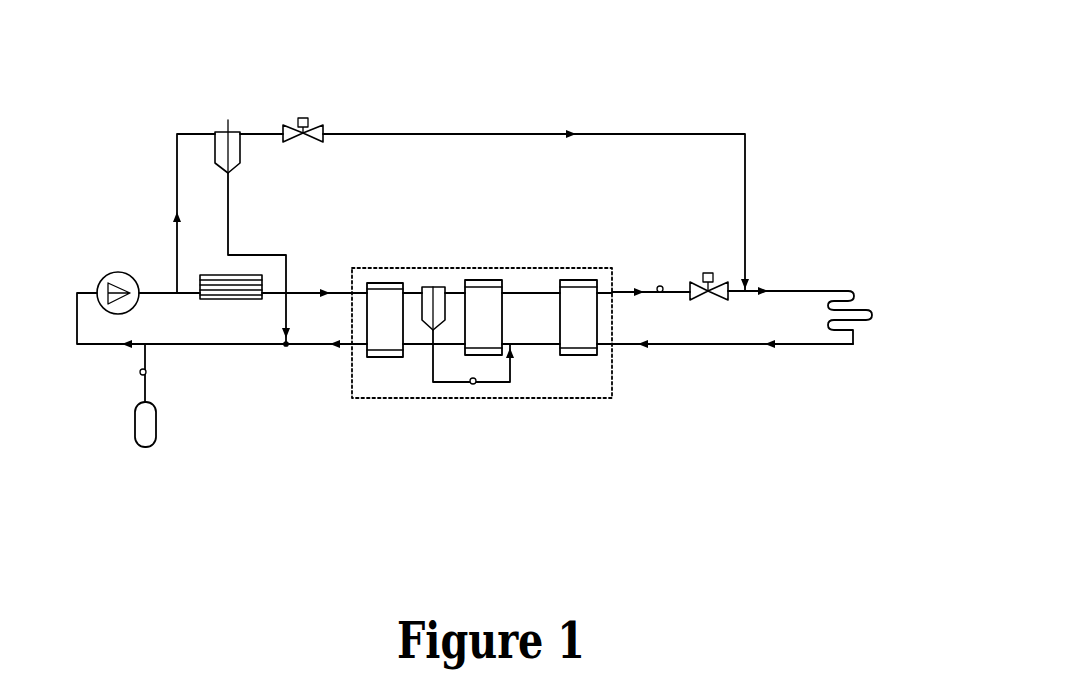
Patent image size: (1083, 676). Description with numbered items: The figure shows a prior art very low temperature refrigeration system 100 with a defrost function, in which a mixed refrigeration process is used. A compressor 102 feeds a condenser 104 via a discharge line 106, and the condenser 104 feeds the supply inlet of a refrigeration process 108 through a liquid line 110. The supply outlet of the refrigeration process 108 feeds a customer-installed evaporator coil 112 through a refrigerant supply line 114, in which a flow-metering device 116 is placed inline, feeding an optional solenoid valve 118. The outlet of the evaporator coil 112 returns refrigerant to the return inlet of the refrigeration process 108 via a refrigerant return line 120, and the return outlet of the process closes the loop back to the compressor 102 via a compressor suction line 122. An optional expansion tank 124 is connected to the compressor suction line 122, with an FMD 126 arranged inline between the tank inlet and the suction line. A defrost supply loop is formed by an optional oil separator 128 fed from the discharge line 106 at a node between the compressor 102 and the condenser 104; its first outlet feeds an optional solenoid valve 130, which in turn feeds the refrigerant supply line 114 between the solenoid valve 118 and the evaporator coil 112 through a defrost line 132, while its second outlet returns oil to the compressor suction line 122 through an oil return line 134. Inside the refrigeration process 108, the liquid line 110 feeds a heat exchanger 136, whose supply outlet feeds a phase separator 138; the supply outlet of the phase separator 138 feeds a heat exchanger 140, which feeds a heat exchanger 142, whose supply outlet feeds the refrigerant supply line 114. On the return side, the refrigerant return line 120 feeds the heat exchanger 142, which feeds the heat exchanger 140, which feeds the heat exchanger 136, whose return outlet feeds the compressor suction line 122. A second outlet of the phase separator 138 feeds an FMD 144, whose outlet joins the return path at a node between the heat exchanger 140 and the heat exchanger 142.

The refrigeration system 100 is at (712, 84).
The compressor 102 is at (118, 272).
The condenser 104 is at (245, 300).
The discharge line 106 is at (169, 291).
The refrigeration process 108 is at (366, 410).
The liquid line 110 is at (338, 297).
The evaporator coil 112 is at (878, 303).
The refrigerant supply line 114 is at (803, 287).
The flow-metering device 116 is at (663, 292).
The solenoid valve 118 is at (704, 273).
The refrigerant return line 120 is at (702, 345).
The compressor suction line 122 is at (218, 346).
The expansion tank 124 is at (138, 446).
The FMD 126 is at (140, 374).
The oil separator 128 is at (220, 131).
The solenoid valve 130 is at (301, 118).
The defrost line 132 is at (508, 95).
The oil return line 134 is at (230, 217).
The heat exchanger 136 is at (380, 284).
The phase separator 138 is at (428, 287).
The heat exchanger 140 is at (465, 349).
The heat exchanger 142 is at (567, 355).
The FMD 144 is at (497, 405).